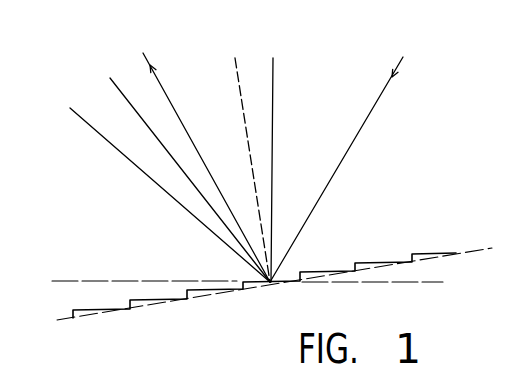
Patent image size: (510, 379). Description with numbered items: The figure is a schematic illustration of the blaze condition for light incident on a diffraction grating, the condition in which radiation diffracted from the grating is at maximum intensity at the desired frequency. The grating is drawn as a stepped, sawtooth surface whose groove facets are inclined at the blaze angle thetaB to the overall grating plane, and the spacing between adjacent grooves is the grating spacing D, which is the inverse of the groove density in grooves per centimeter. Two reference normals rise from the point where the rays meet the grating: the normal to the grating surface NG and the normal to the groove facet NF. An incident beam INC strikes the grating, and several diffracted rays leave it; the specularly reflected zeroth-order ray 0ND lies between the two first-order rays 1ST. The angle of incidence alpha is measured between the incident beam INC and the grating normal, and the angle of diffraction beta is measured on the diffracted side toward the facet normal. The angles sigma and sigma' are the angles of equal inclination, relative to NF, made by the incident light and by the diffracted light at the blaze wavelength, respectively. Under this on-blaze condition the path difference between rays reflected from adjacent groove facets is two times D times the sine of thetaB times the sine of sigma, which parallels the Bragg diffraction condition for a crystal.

The first order diffracted beams 1ST is at (163, 154).
The zeroth order (specularly reflected) beam 0ND is at (181, 169).
The normal to the grating surface NG is at (243, 155).
The normal to the groove facet surface NF is at (274, 155).
The incident beam INC is at (348, 157).
The grating spacing D is at (187, 303).
The blaze angle thetaB is at (60, 255).
The angle of incidence alpha is at (340, 163).
The angle of diffraction beta is at (248, 145).
The angle of equal inclination of the incident light sigma is at (356, 234).
The angle of equal inclination of the diffracted light sigma' is at (192, 236).